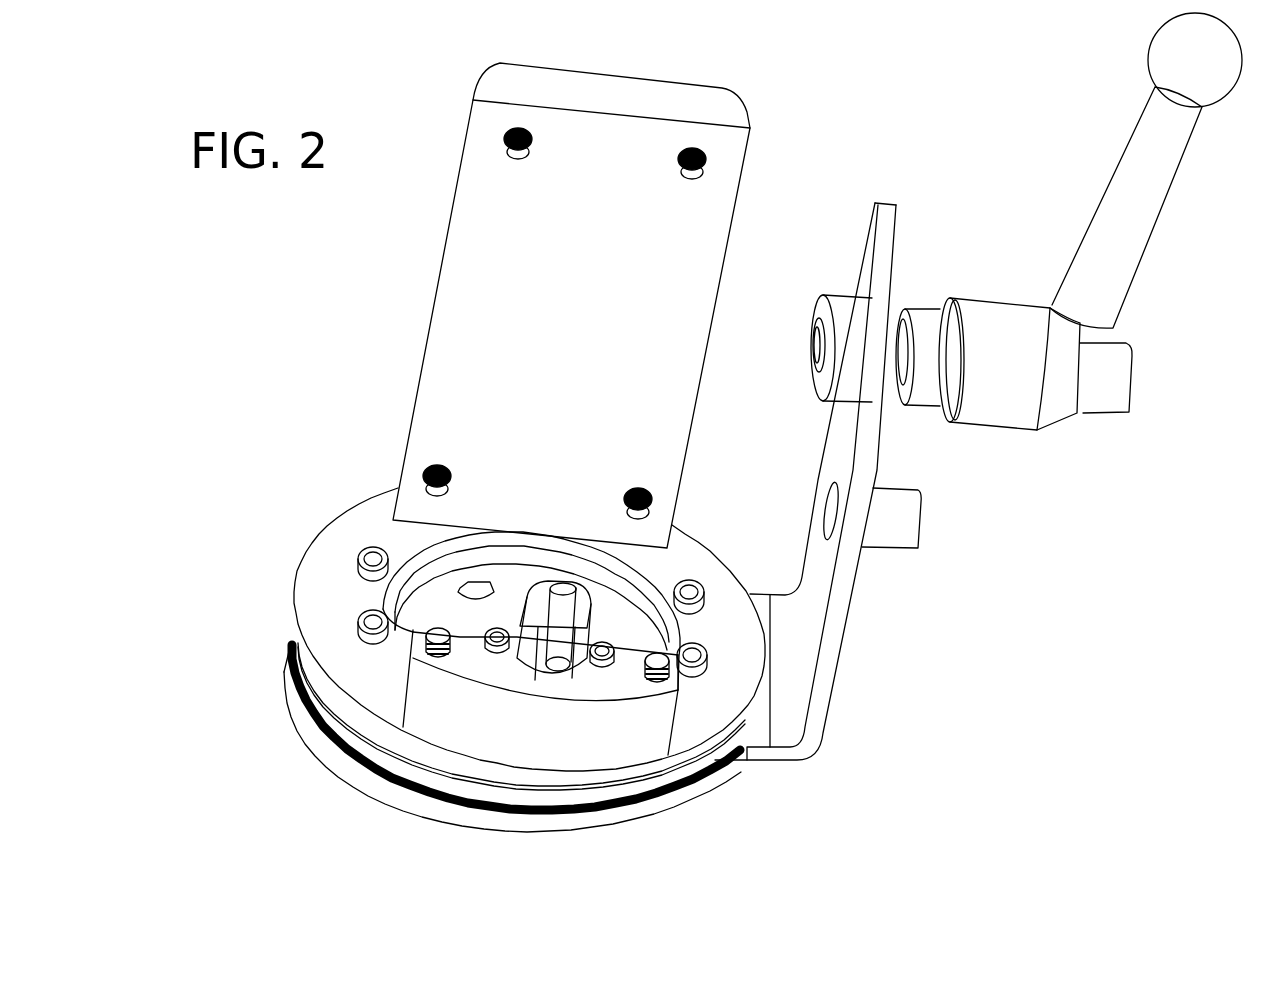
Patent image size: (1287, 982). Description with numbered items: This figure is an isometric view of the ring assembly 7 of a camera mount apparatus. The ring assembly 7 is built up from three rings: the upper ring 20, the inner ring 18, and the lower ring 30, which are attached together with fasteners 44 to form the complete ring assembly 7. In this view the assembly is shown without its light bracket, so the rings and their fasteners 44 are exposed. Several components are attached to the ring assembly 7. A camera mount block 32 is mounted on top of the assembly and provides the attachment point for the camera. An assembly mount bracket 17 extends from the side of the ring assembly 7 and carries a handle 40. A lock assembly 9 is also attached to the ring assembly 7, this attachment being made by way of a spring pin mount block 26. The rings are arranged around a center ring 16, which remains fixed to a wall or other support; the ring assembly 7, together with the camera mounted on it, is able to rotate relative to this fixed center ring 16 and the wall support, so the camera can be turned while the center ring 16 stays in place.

The ring assembly 7 is at (337, 505).
The lock assembly 9 is at (443, 722).
The center ring 16 is at (328, 700).
The assembly mount bracket 17 is at (843, 585).
The inner ring 18 is at (620, 600).
The upper ring 20 is at (335, 662).
The spring pin mount block 26 is at (648, 722).
The lower ring 30 is at (632, 812).
The camera mount block 32 is at (728, 113).
The handle 40 is at (1123, 208).
The fasteners 44 is at (358, 630).